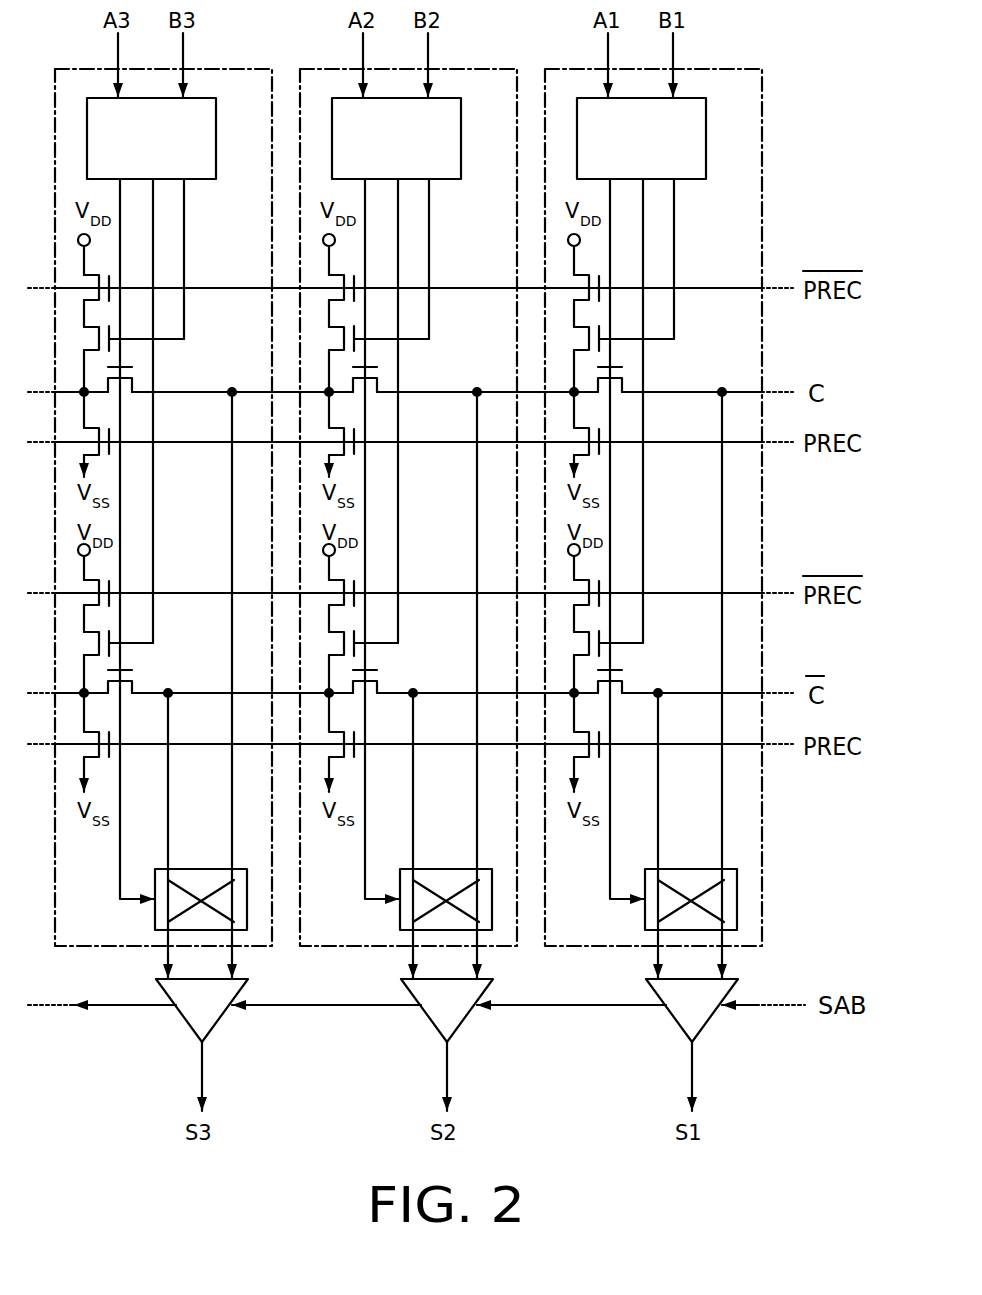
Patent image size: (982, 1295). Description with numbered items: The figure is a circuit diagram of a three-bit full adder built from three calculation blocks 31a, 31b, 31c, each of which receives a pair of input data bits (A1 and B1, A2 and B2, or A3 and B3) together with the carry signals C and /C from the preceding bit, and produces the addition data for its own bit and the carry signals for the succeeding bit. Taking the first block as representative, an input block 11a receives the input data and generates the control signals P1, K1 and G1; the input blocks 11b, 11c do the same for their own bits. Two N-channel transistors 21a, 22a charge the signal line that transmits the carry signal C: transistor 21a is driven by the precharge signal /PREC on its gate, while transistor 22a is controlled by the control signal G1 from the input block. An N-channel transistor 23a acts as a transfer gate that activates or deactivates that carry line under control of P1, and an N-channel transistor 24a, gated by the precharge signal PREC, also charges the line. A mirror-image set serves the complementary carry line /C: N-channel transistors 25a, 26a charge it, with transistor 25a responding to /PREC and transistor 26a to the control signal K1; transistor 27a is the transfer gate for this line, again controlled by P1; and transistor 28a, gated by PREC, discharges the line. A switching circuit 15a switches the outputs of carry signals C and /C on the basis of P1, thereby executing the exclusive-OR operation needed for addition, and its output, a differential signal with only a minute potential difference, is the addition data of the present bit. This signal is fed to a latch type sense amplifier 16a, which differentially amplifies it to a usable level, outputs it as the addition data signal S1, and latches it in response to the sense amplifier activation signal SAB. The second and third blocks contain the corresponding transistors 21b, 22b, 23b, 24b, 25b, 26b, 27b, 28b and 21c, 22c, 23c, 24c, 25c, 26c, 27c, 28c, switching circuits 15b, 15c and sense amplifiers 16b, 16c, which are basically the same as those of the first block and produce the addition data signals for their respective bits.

The calculation block 31a is at (703, 69).
The calculation block 31b is at (458, 69).
The calculation block 31c is at (213, 69).
The input block 11a is at (686, 179).
The input block 11b is at (441, 179).
The input block 11c is at (196, 179).
The N-channel transistor 21a is at (578, 275).
The N-channel transistor 21b is at (333, 275).
The N-channel transistor 21c is at (88, 275).
The N-channel transistor 22a is at (578, 327).
The N-channel transistor 22b is at (333, 327).
The N-channel transistor 22c is at (88, 327).
The N-channel transistor 23a is at (622, 384).
The N-channel transistor 23b is at (377, 384).
The N-channel transistor 23c is at (132, 384).
The N-channel transistor 24a is at (600, 440).
The N-channel transistor 24b is at (355, 440).
The N-channel transistor 24c is at (110, 440).
The N-channel transistor 25a is at (600, 588).
The N-channel transistor 25b is at (355, 588).
The N-channel transistor 25c is at (110, 588).
The N-channel transistor 26a is at (600, 637).
The N-channel transistor 26b is at (355, 637).
The N-channel transistor 26c is at (110, 637).
The N-channel transistor 27a is at (622, 688).
The N-channel transistor 27b is at (377, 688).
The N-channel transistor 27c is at (132, 688).
The N-channel transistor 28a is at (600, 748).
The N-channel transistor 28b is at (355, 748).
The N-channel transistor 28c is at (110, 748).
The switching circuit 15a is at (645, 910).
The switching circuit 15b is at (400, 910).
The switching circuit 15c is at (155, 910).
The latch type sense amplifier 16a is at (711, 1015).
The latch type sense amplifier 16b is at (466, 1015).
The latch type sense amplifier 16c is at (221, 1015).